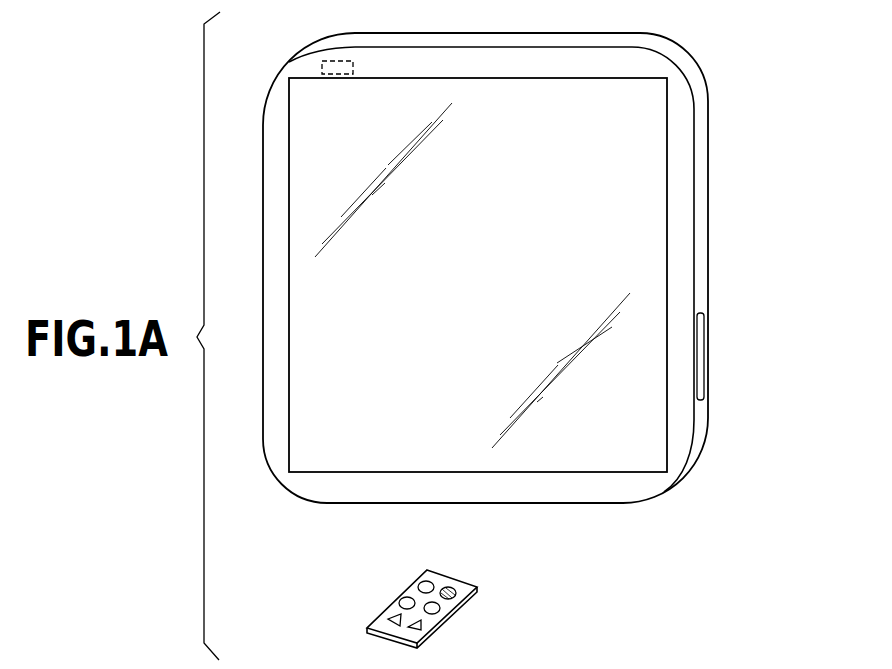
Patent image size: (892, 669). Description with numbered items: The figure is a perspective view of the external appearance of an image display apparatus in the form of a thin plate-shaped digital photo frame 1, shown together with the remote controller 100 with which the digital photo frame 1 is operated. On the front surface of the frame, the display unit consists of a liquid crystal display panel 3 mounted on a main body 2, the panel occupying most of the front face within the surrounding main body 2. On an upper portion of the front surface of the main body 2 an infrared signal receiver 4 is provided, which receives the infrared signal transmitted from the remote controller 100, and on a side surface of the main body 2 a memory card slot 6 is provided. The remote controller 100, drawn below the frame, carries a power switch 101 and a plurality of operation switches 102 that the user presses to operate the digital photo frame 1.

The digital photo frame 1 is at (512, 269).
The main body 2 is at (703, 153).
The liquid crystal display panel 3 is at (633, 410).
The infrared signal receiver 4 is at (322, 67).
The memory card slot 6 is at (700, 357).
The remote controller 100 is at (451, 581).
The power switch 101 is at (452, 585).
The operation switches 102 is at (436, 606).